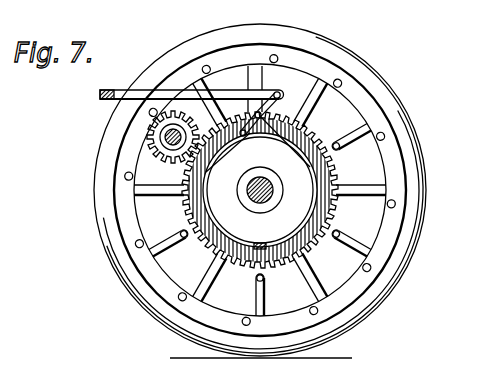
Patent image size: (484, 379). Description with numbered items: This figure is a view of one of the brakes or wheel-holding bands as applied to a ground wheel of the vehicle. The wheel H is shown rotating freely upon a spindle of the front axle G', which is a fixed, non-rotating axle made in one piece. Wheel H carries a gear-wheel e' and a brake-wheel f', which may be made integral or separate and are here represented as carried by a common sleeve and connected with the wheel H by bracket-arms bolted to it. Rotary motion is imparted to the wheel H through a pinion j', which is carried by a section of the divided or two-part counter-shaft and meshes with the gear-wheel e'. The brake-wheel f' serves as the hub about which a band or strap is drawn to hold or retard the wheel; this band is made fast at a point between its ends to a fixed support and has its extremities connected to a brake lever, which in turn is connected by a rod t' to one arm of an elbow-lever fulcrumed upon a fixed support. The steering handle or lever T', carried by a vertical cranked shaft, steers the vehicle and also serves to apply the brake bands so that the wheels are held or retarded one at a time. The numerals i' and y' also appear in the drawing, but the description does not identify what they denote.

The wheel H is at (260, 190).
The gear-wheel e' is at (274, 190).
The brake-wheel f' is at (260, 191).
The front axle G' is at (268, 190).
The pinion j' is at (131, 137).
The spoke i' is at (159, 178).
The rod t' is at (247, 89).
The lever bar y' is at (176, 104).
The steering handle or lever T' is at (258, 124).